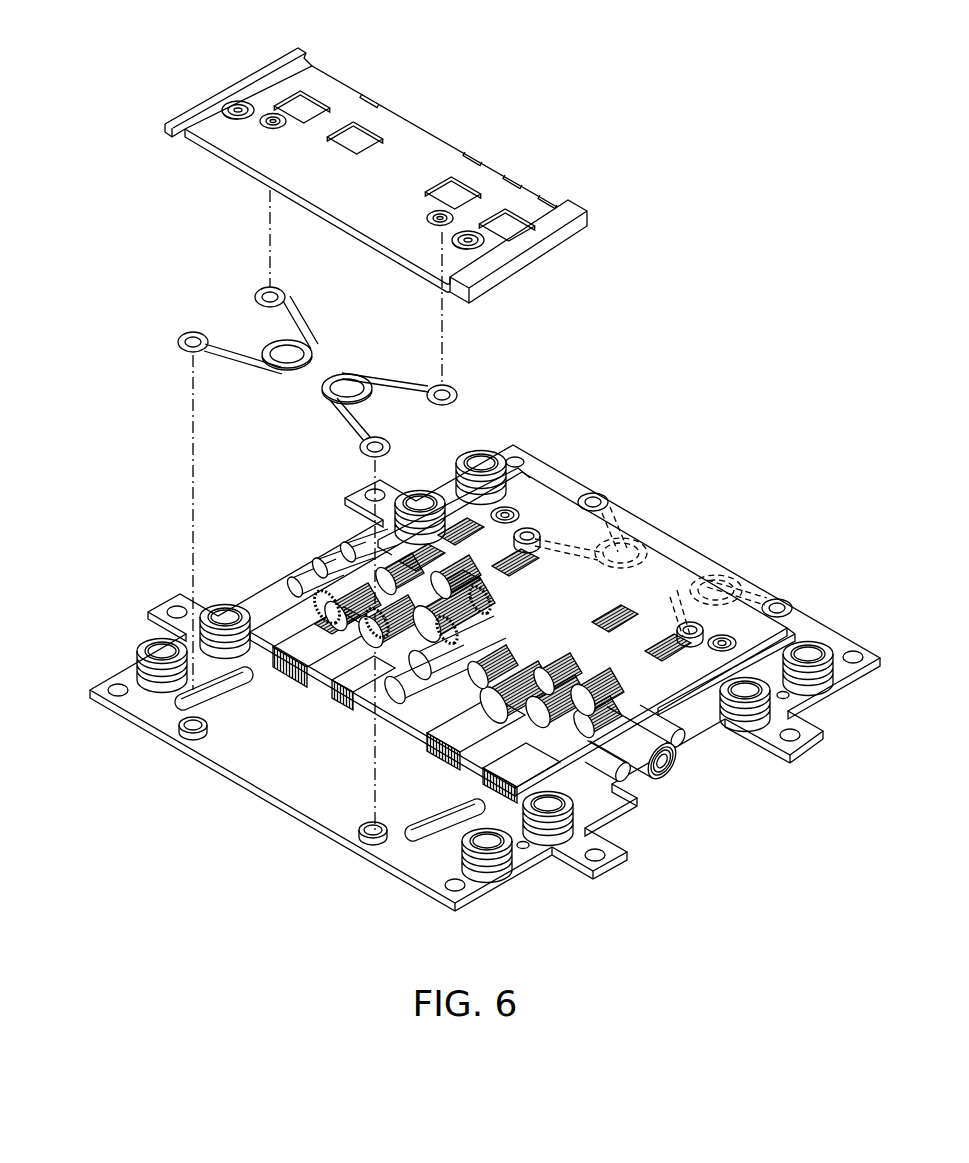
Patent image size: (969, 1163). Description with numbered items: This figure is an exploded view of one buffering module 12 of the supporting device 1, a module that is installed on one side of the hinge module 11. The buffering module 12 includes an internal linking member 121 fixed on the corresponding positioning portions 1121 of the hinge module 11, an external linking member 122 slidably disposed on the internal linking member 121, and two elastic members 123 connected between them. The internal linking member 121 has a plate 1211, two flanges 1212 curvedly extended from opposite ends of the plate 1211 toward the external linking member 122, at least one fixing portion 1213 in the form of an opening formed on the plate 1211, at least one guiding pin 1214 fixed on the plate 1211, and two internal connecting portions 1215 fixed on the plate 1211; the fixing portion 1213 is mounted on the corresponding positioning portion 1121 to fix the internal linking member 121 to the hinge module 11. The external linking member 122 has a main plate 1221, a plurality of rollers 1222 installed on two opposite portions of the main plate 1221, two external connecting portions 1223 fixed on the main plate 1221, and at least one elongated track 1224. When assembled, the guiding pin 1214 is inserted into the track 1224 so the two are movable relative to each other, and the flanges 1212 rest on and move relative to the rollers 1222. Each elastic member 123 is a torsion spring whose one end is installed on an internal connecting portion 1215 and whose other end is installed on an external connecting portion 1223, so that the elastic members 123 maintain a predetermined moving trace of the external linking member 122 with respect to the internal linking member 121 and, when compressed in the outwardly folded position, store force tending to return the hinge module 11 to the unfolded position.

The supporting device 1 is at (883, 82).
The hinge module 11 is at (676, 762).
The positioning portion 1121 is at (543, 770).
The buffering module 12 is at (678, 530).
The internal linking member 121 is at (205, 98).
The plate 1211 is at (417, 140).
The flange 1212 is at (272, 66).
The fixing portion 1213 is at (352, 138).
The guiding pin 1214 is at (238, 108).
The internal connecting portion 1215 is at (267, 128).
The external linking member 122 is at (275, 812).
The main plate 1221 is at (326, 785).
The roller 1222 is at (227, 615).
The external connecting portion 1223 is at (195, 730).
The elongated track 1224 is at (217, 690).
The elastic member 123 is at (250, 377).